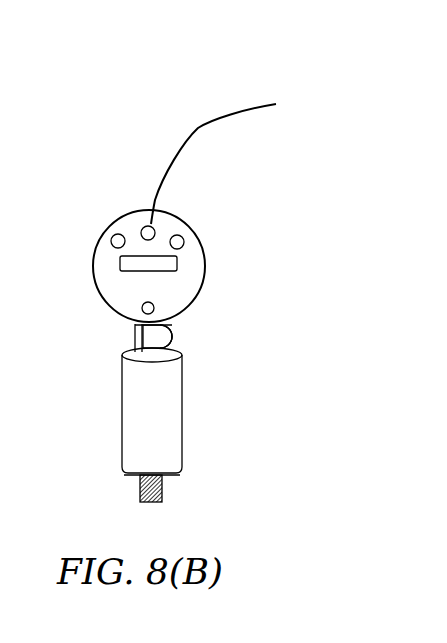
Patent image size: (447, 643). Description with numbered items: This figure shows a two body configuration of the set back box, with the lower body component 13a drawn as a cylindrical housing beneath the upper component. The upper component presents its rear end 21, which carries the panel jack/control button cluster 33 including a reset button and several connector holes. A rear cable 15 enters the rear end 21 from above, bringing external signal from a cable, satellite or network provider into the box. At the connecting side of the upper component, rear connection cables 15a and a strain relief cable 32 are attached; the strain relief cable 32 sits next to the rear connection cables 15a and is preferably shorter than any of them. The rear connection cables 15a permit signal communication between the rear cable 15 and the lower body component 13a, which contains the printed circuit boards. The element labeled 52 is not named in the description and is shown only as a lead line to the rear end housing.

The rear cable 15 is at (197, 127).
The rear end 21 is at (124, 229).
The plug head 52 is at (203, 250).
The panel jack/control button cluster 33 is at (177, 262).
The strain relief cable 32 is at (173, 333).
The rear connection cables 15a is at (133, 339).
The lower body component 13a is at (175, 405).